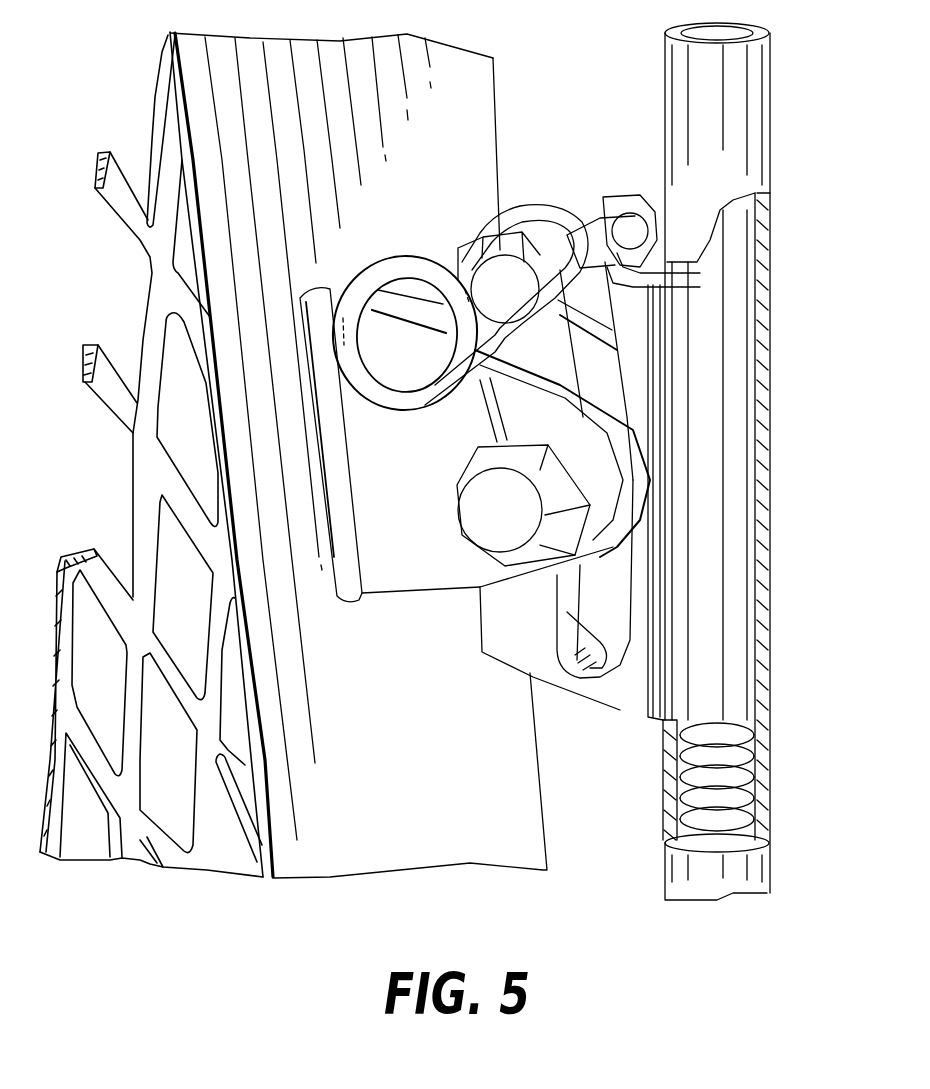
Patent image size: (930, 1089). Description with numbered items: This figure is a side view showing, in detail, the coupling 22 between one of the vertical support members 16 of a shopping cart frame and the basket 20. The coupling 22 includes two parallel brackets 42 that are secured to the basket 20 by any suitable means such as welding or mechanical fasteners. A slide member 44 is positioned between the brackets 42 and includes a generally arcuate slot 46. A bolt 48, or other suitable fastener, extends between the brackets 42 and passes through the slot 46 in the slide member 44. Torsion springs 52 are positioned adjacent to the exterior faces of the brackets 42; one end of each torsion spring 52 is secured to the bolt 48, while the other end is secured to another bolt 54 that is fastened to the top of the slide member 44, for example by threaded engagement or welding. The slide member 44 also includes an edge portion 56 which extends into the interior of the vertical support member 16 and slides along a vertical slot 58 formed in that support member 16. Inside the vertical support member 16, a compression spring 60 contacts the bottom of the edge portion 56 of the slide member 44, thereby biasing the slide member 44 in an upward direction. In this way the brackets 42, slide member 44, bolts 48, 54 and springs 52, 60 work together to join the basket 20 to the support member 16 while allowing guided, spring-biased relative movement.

The support member 16 is at (770, 127).
The basket 20 is at (140, 465).
The coupling 22 is at (560, 127).
The brackets 42 is at (473, 244).
The slide member 44 is at (513, 650).
The arcuate slot 46 is at (570, 613).
The bolt 48 is at (500, 520).
The torsion springs 52 is at (520, 205).
The bolt 54 is at (591, 210).
The edge portion 56 is at (735, 503).
The vertical slot 58 is at (668, 800).
The compression spring 60 is at (743, 770).